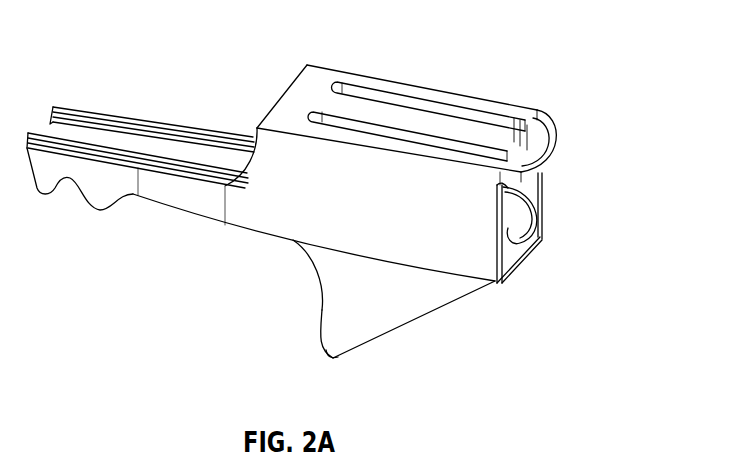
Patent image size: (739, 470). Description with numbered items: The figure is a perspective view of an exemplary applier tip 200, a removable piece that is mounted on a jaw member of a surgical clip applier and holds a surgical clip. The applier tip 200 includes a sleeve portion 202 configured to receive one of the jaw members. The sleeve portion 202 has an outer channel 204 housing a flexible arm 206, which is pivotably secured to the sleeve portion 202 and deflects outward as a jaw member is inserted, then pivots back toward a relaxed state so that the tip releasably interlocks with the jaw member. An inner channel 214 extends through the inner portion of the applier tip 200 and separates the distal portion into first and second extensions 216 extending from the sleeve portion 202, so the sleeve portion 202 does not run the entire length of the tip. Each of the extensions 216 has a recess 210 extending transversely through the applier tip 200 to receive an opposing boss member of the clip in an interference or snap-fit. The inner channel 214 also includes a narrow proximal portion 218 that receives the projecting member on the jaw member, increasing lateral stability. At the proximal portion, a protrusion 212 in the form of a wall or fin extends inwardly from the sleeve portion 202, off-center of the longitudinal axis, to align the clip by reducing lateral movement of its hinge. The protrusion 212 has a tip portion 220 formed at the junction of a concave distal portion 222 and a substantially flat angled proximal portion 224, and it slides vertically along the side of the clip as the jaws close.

The applier tip 200 is at (542, 60).
The sleeve portion 202 is at (312, 224).
The outer channel 204 is at (549, 120).
The flexible arm 206 is at (380, 112).
The recess 210 is at (72, 178).
The protrusion 212 is at (330, 282).
The inner channel 214 is at (70, 118).
The extensions 216 is at (146, 122).
The narrow proximal portion 218 is at (542, 222).
The tip portion 220 is at (332, 352).
The concave distal portion 222 is at (317, 330).
The substantially flat angled proximal portion 224 is at (402, 327).